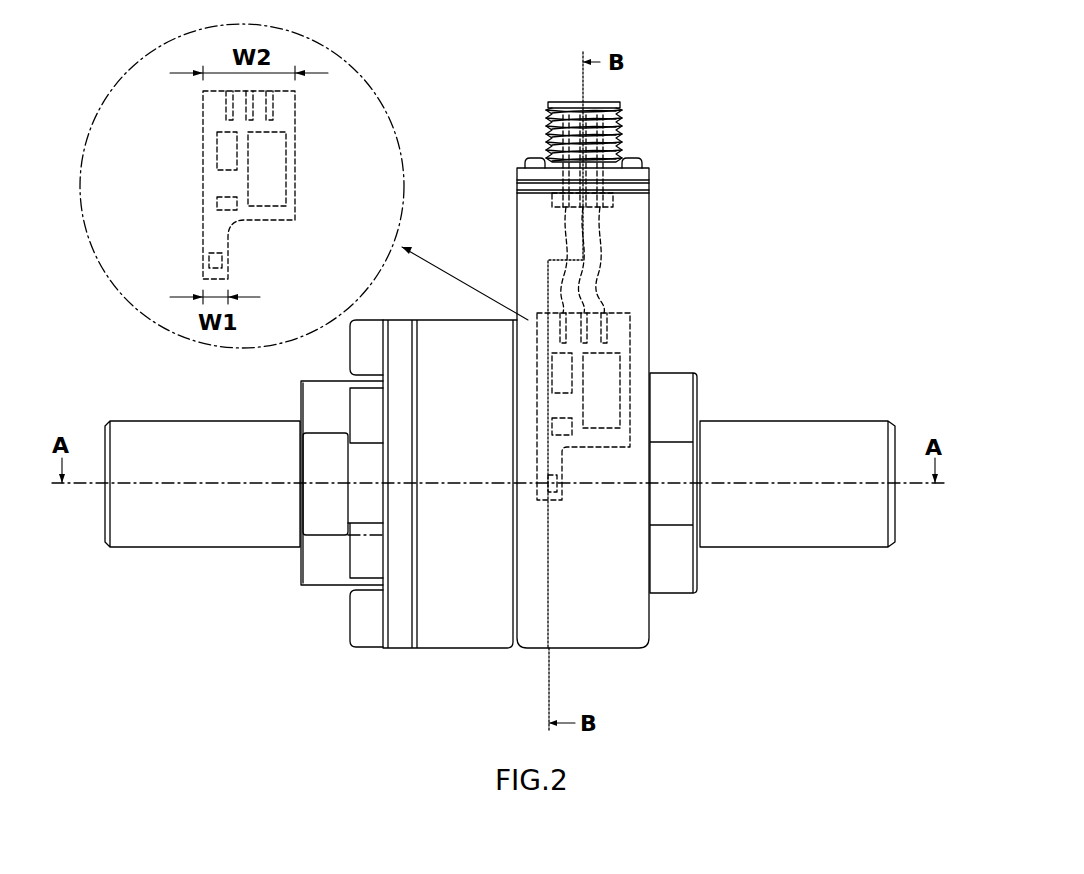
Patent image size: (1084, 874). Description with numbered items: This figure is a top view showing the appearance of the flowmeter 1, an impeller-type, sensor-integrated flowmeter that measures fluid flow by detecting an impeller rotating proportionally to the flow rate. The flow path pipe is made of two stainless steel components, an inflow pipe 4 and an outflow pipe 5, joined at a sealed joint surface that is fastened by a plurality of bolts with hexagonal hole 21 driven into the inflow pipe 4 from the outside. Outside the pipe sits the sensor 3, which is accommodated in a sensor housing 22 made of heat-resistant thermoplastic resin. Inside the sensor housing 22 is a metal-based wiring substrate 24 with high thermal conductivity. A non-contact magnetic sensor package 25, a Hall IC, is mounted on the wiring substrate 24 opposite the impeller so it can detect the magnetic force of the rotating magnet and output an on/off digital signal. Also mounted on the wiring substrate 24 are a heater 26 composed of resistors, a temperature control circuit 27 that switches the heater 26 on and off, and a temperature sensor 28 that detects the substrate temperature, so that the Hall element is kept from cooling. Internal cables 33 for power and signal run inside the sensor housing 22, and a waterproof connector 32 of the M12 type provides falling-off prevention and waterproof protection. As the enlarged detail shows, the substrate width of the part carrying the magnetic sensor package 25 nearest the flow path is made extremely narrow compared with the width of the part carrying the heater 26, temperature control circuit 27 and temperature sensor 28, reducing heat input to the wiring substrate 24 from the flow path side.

The flowmeter 1 is at (836, 92).
The sensor 3 is at (448, 339).
The inflow pipe 4 is at (182, 421).
The outflow pipe 5 is at (817, 421).
The bolts with hexagonal hole 21 is at (368, 648).
The sensor housing 22 is at (517, 215).
The metal-based wiring substrate 24 is at (615, 308).
The magnetic sensor package 25 is at (557, 488).
The heater 26 is at (572, 375).
The temperature control circuit 27 is at (605, 348).
The temperature sensor 28 is at (572, 427).
The waterproof connector 32 is at (548, 108).
The internal cables 33 is at (600, 268).